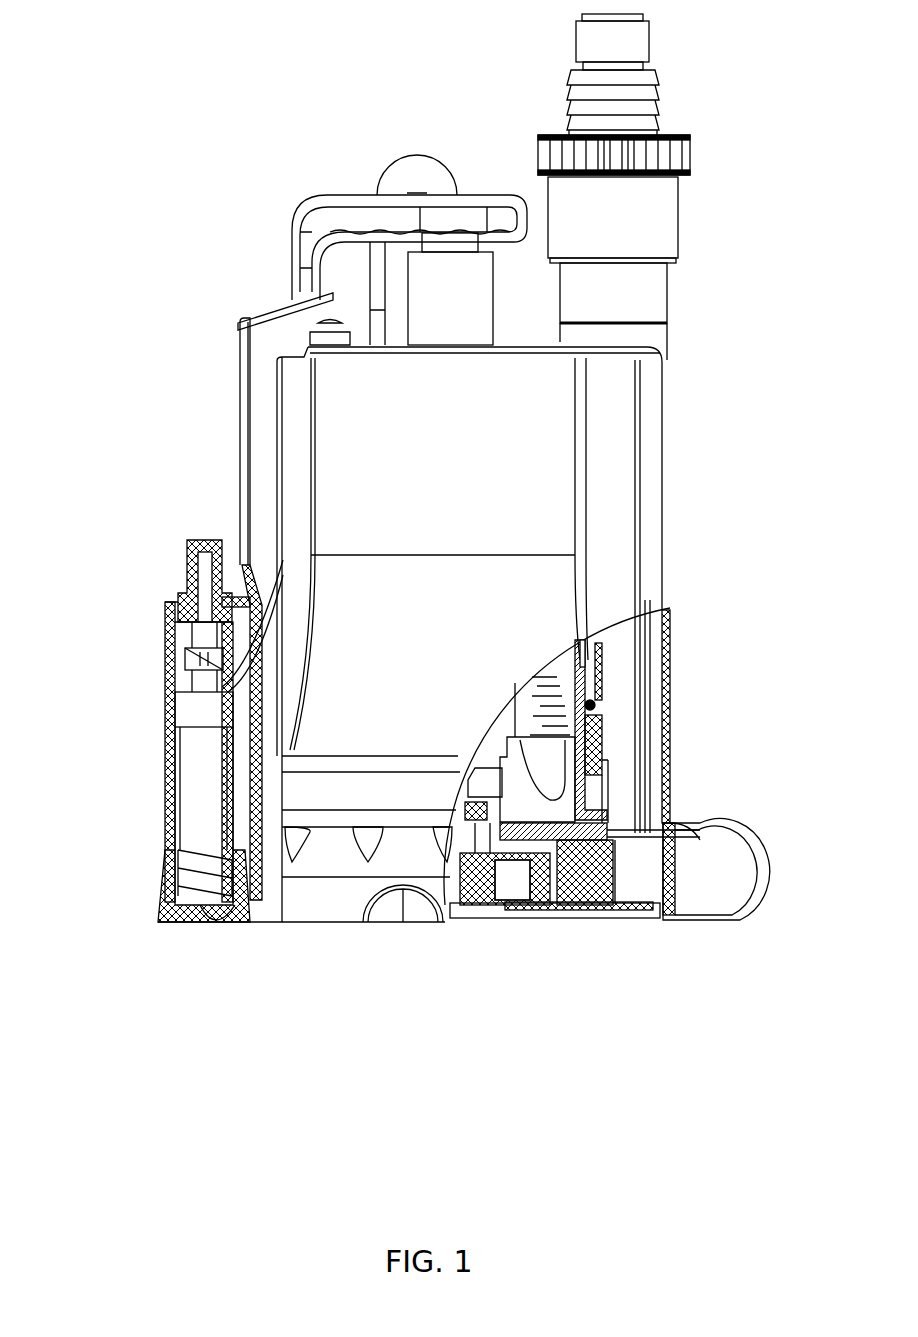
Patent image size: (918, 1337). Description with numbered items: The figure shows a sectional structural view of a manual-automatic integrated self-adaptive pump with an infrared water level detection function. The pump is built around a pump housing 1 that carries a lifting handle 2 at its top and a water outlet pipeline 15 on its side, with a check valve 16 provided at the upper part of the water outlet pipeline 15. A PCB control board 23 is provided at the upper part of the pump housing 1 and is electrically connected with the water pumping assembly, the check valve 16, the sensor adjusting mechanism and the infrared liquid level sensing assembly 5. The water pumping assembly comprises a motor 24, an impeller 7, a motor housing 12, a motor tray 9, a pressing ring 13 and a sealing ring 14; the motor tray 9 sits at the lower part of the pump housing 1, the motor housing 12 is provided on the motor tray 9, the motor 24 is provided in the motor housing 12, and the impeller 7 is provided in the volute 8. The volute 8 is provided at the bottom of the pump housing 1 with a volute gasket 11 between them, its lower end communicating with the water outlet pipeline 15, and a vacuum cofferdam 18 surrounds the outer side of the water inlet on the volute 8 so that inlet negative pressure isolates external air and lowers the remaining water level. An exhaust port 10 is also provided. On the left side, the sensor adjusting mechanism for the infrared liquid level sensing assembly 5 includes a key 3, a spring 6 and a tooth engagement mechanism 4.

The pump housing 1 is at (441, 500).
The lifting handle 2 is at (242, 428).
The key 3 is at (188, 558).
The tooth engagement mechanism 4 is at (203, 663).
The infrared liquid level sensing assembly 5 is at (178, 715).
The spring 6 is at (168, 807).
The impeller 7 is at (557, 920).
The volute 8 is at (608, 902).
The motor tray 9 is at (603, 845).
The exhaust port 10 is at (677, 838).
The volute gasket 11 is at (607, 842).
The motor housing 12 is at (587, 763).
The pressing ring 13 is at (603, 733).
The sealing ring 14 is at (595, 700).
The water outlet pipeline 15 is at (637, 448).
The check valve 16 is at (640, 255).
The vacuum cofferdam 18 is at (553, 918).
The PCB control board 23 is at (458, 477).
The motor 24 is at (553, 675).